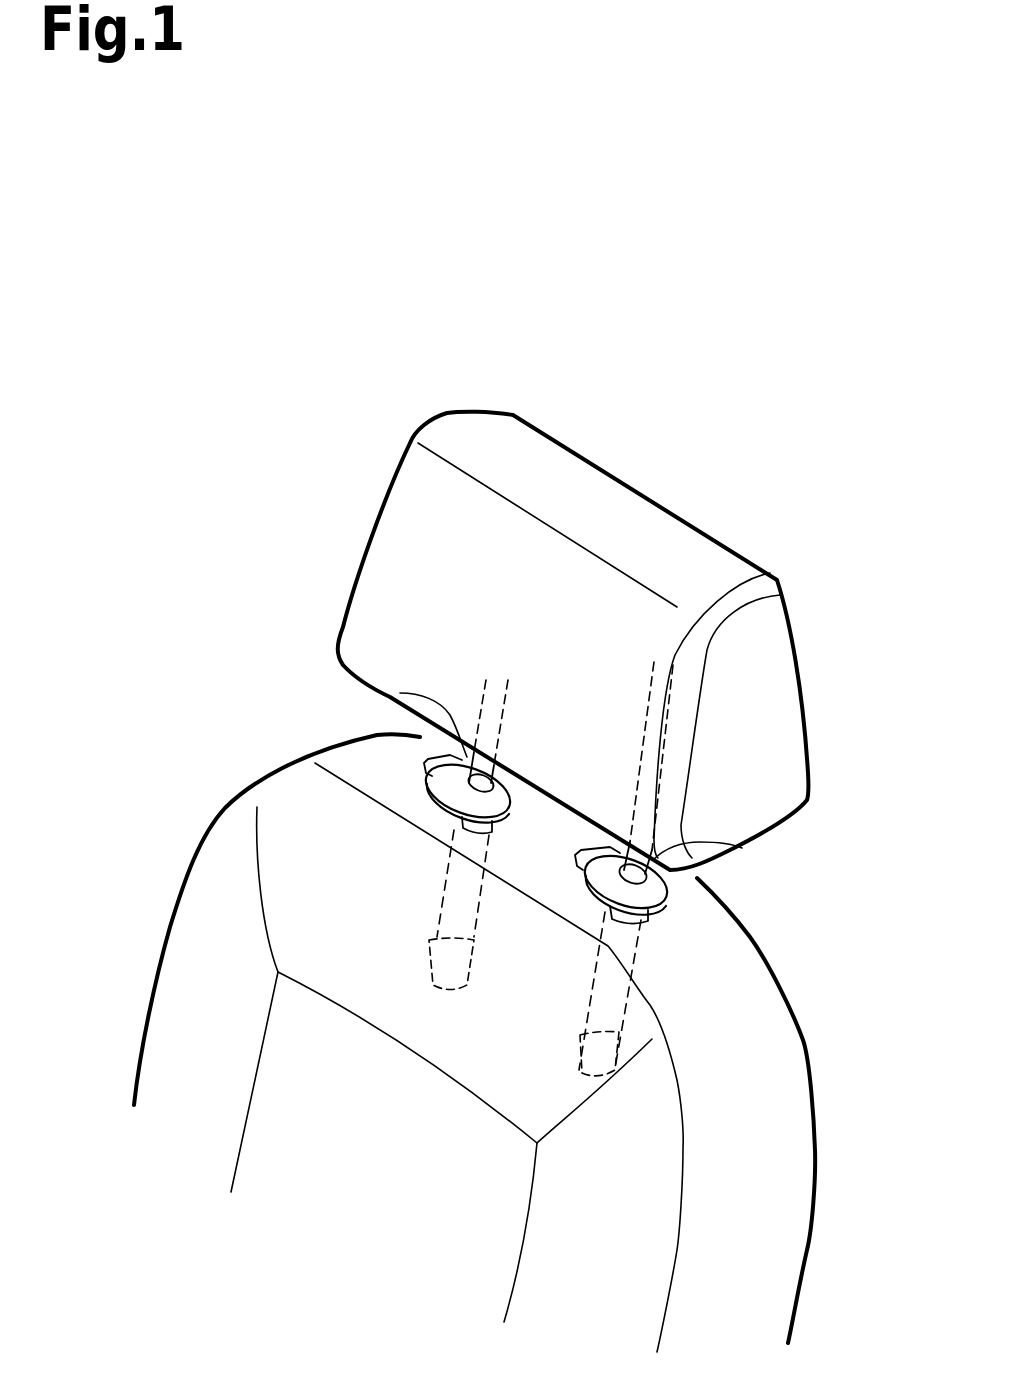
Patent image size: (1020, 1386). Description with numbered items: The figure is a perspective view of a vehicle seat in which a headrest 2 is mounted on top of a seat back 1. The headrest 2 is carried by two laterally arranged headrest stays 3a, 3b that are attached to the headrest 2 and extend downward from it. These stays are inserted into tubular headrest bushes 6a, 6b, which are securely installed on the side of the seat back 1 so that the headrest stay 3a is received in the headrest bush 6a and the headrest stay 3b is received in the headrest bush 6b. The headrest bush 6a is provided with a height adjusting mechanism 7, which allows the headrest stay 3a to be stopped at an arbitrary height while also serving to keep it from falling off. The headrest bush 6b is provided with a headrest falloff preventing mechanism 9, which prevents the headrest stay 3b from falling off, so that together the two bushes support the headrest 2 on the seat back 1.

The seat back 1 is at (227, 928).
The headrest 2 is at (433, 560).
The headrest stay 3a is at (742, 848).
The headrest stay 3b is at (390, 697).
The headrest bush 6a is at (620, 995).
The headrest bush 6b is at (455, 878).
The height adjusting mechanism 7 is at (680, 919).
The headrest falloff preventing mechanism 9 is at (398, 762).